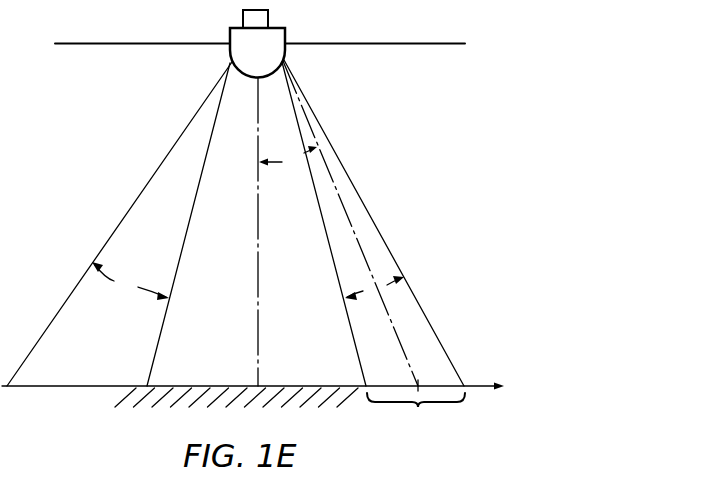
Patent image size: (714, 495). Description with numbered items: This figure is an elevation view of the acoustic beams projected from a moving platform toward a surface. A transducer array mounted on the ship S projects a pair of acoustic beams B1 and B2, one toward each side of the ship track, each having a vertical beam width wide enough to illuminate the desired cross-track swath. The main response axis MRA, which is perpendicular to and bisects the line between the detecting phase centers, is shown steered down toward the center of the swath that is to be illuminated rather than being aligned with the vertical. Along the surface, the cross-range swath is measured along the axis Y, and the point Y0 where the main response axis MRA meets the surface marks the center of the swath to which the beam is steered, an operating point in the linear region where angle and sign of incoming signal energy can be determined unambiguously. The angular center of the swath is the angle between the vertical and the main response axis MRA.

The ship S is at (257, 44).
The acoustic beam B1 is at (153, 172).
The acoustic beam B2 is at (342, 170).
The main response axis MRA is at (350, 223).
The cross-range swath axis Y is at (259, 387).
The swath center point Y0 is at (420, 385).